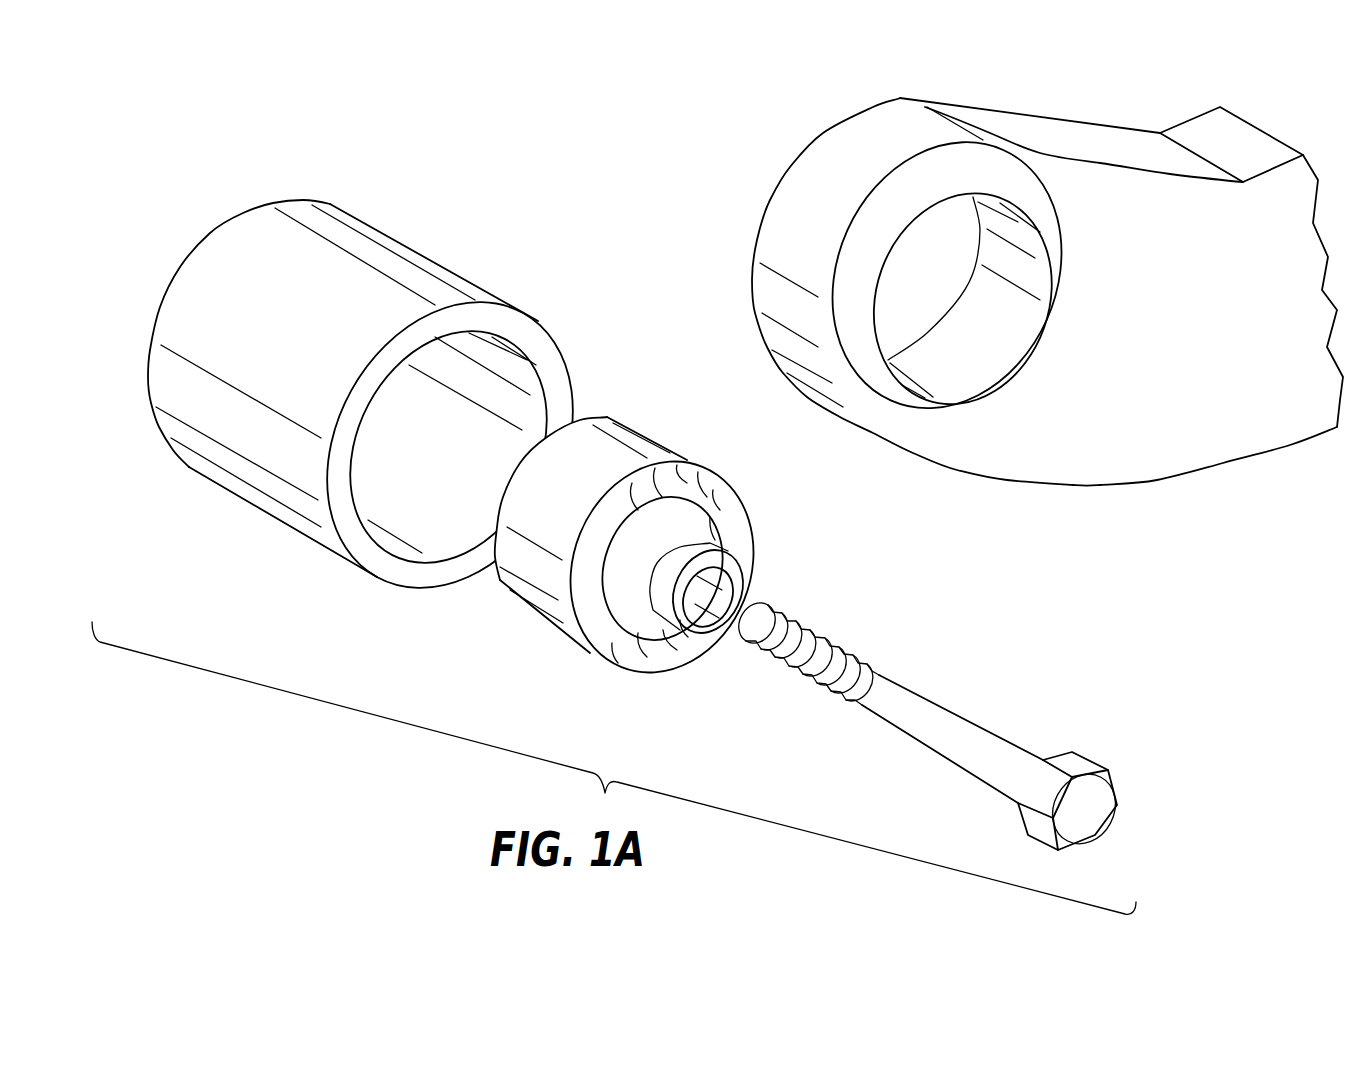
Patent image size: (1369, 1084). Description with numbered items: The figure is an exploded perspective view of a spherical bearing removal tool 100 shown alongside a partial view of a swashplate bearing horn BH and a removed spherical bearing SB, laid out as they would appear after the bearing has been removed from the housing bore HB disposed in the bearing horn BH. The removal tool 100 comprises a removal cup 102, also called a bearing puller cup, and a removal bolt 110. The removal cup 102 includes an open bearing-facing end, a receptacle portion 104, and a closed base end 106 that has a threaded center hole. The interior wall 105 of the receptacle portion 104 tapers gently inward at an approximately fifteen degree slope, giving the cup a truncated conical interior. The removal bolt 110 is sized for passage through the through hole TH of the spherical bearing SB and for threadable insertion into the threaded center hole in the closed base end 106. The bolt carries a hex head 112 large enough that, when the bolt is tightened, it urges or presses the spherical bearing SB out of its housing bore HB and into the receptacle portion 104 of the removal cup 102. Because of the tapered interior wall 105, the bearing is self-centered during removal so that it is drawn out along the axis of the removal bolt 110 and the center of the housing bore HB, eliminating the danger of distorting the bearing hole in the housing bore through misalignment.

The spherical bearing removal tool 100 is at (385, 397).
The removal cup 102 is at (404, 269).
The receptacle portion 104 is at (483, 381).
The interior wall 105 is at (402, 536).
The closed base end 106 is at (231, 205).
The spherical bearing SB is at (655, 551).
The through hole TH is at (708, 585).
The removal bolt 110 is at (945, 729).
The hex head 112 is at (1069, 758).
The swashplate bearing horn BH is at (1047, 302).
The housing bore HB is at (950, 284).